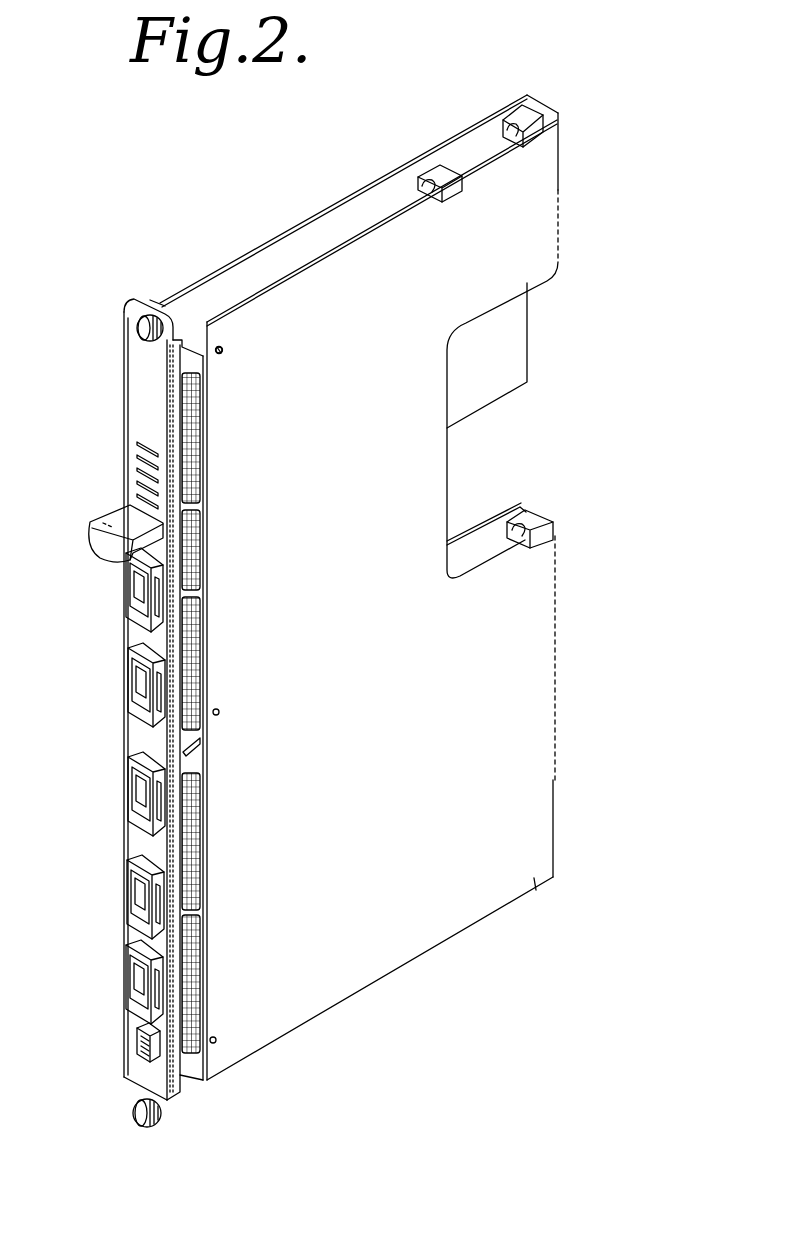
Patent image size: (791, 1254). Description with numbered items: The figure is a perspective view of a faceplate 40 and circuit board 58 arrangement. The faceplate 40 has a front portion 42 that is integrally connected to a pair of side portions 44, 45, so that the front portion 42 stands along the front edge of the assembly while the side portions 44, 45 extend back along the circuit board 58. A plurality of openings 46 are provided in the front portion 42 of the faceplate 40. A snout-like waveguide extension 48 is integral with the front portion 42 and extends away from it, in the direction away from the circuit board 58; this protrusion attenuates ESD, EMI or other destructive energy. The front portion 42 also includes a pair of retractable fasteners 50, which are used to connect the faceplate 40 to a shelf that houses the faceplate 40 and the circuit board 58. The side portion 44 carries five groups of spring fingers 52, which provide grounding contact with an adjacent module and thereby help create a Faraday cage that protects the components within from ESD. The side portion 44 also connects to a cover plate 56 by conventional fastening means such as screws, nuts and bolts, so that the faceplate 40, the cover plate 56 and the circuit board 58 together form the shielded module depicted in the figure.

The faceplate 40 is at (110, 326).
The front portion 42 is at (138, 400).
The side portion 44 is at (221, 351).
The side portion 45 is at (155, 296).
The openings 46 is at (138, 596).
The waveguide extension 48 is at (137, 822).
The retractable fasteners 50 is at (135, 315).
The spring fingers 52 is at (200, 490).
The cover plate 56 is at (533, 243).
The circuit board 58 is at (310, 214).